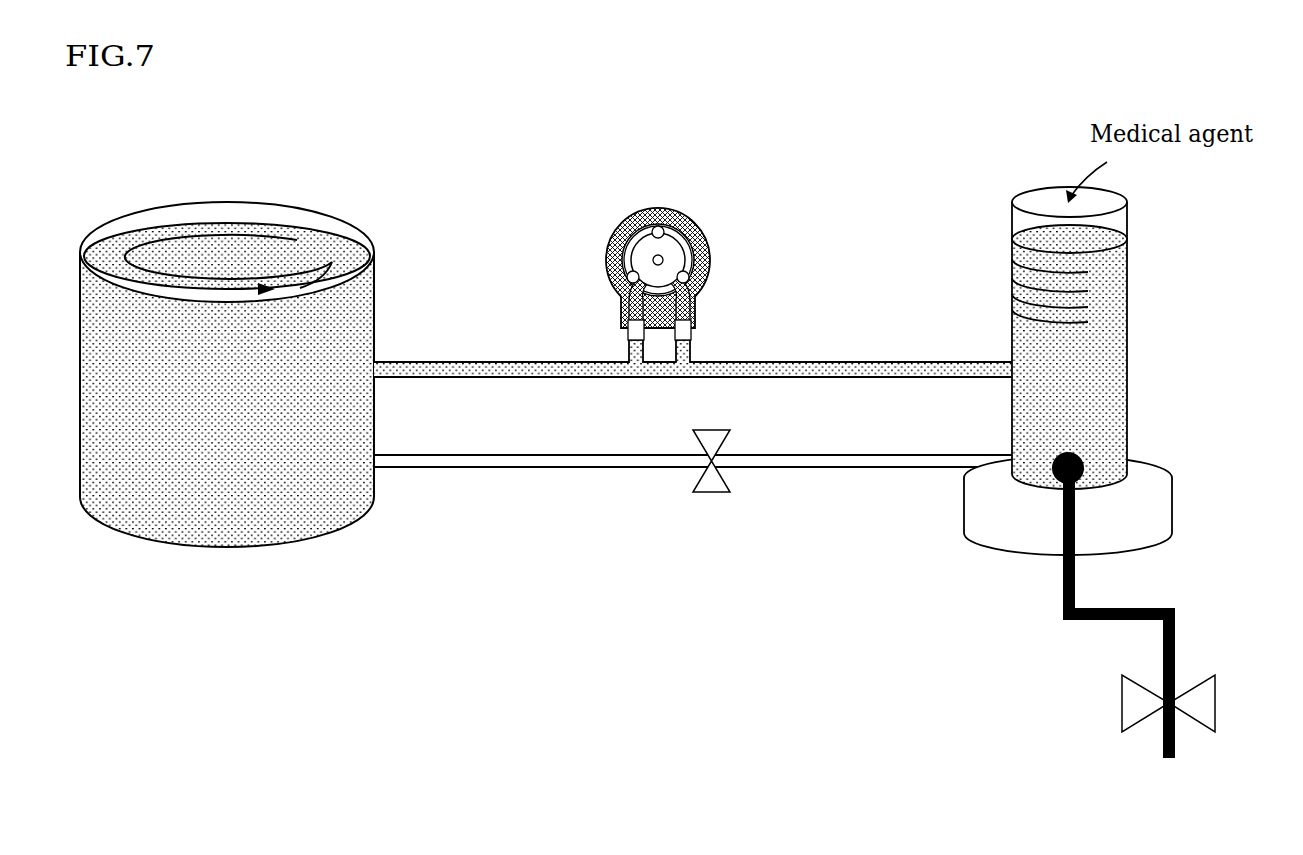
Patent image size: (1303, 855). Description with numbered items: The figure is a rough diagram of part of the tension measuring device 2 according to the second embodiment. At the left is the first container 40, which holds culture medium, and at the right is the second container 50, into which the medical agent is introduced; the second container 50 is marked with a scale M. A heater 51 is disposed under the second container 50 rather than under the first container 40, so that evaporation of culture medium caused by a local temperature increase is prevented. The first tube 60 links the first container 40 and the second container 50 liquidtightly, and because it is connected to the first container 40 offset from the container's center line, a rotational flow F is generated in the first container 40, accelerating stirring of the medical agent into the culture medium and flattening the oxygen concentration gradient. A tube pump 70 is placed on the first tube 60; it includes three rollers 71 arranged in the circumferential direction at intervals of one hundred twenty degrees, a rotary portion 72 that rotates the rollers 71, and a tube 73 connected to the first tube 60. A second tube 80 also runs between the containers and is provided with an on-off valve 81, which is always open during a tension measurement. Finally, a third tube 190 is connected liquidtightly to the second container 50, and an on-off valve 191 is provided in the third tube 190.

The tension measuring device 2 is at (690, 216).
The first container 40 is at (219, 548).
The rotational flow F is at (219, 228).
The second container 50 is at (1120, 356).
The scale M is at (1082, 285).
The heater 51 is at (1175, 507).
The first tube 60 is at (851, 362).
The tube pump 70 is at (700, 214).
The rollers 71 is at (658, 208).
The rotary portion 72 is at (616, 228).
The tube 73 is at (712, 250).
The second tube 80 is at (543, 470).
The on-off valve 81 is at (707, 494).
The third tube 190 is at (1087, 621).
The on-off valve 191 is at (1216, 725).